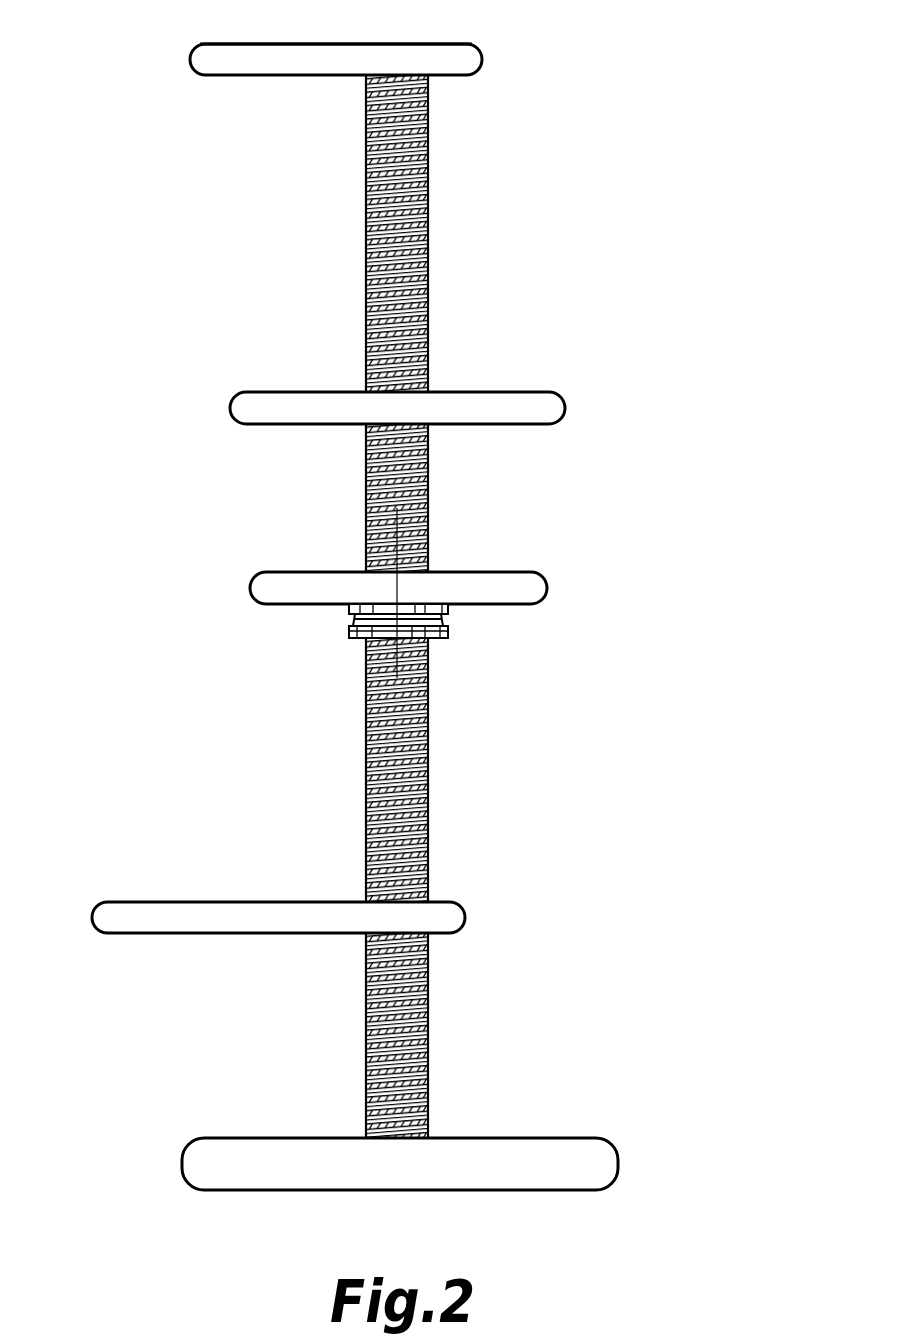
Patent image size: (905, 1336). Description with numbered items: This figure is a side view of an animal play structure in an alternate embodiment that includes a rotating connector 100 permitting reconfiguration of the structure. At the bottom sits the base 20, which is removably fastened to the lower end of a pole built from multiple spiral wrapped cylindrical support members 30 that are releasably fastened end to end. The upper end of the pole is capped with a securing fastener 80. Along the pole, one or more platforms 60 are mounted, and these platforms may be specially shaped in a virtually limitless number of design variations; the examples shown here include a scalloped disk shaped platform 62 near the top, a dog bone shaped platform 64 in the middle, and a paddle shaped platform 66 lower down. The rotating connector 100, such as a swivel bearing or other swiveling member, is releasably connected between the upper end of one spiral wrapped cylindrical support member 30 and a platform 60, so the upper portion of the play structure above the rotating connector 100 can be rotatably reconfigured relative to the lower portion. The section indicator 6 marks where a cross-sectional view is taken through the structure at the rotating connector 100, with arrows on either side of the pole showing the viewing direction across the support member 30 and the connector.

The base 20 is at (186, 1140).
The multiple spiral wrapped cylindrical support member 30 is at (428, 196).
The platform 60 is at (231, 396).
The scalloped disk shaped platform 62 is at (192, 47).
The dog bone shaped platform 64 is at (251, 578).
The paddle shaped platform 66 is at (93, 906).
The securing fastener 80 is at (397, 44).
The rotating connector 100 is at (350, 630).
The section line 6- 6 is at (385, 522).